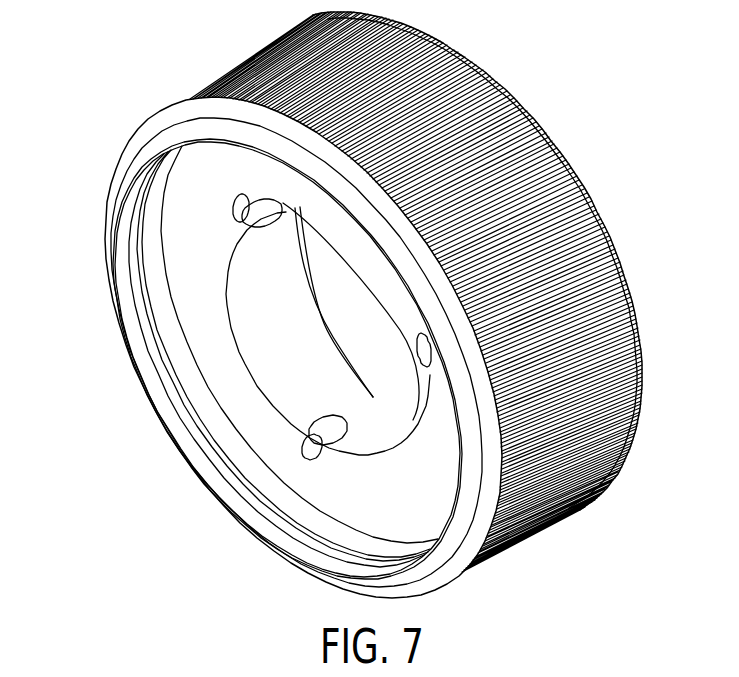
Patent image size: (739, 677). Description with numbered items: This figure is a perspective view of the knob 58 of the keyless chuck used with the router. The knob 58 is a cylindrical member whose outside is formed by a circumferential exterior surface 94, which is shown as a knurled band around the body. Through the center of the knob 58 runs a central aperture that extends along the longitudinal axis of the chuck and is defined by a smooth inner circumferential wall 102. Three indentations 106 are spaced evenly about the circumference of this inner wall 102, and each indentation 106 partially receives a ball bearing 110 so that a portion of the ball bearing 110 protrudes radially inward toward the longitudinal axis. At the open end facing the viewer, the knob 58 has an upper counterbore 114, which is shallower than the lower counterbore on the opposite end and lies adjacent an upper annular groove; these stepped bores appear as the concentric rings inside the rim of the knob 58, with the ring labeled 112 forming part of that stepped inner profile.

The knob 58 is at (180, 69).
The circumferential exterior surface 94 is at (578, 202).
The inner circumferential wall 102 is at (253, 305).
The indentations 106 is at (232, 210).
The ball bearings 110 is at (322, 435).
The groove 112 is at (260, 494).
The upper counterbore 114 is at (223, 383).